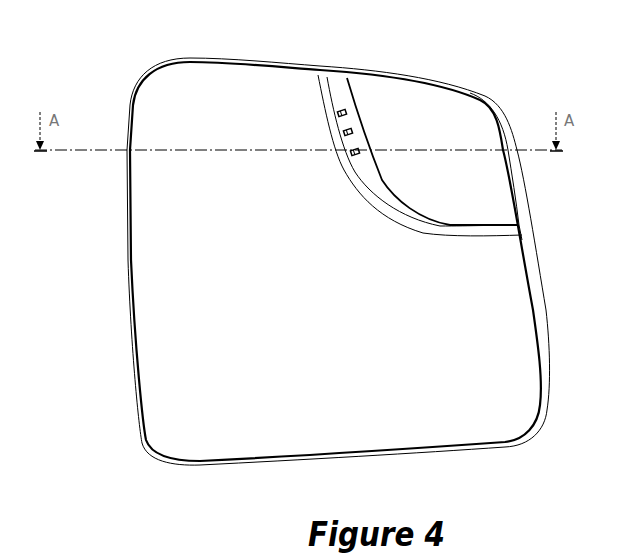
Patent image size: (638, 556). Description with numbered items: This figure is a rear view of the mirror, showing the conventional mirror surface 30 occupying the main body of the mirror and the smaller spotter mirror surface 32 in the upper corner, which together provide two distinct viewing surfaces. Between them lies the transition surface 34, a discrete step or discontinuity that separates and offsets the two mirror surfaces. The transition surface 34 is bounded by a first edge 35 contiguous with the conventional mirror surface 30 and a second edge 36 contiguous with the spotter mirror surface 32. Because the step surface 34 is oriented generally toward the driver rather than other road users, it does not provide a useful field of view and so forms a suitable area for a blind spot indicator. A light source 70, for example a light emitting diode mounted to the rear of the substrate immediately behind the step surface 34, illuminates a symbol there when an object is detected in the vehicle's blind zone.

The conventional mirror surface 30 is at (157, 282).
The spotter mirror surface 32 is at (443, 133).
The transition surface 34 is at (345, 98).
The first edge 35 is at (366, 199).
The second edge 36 is at (411, 212).
The light source 70 is at (342, 132).